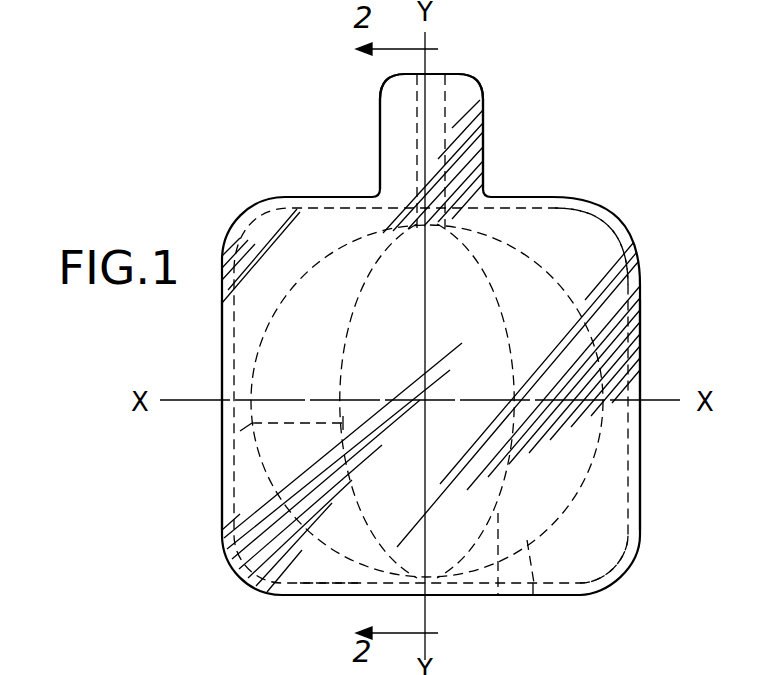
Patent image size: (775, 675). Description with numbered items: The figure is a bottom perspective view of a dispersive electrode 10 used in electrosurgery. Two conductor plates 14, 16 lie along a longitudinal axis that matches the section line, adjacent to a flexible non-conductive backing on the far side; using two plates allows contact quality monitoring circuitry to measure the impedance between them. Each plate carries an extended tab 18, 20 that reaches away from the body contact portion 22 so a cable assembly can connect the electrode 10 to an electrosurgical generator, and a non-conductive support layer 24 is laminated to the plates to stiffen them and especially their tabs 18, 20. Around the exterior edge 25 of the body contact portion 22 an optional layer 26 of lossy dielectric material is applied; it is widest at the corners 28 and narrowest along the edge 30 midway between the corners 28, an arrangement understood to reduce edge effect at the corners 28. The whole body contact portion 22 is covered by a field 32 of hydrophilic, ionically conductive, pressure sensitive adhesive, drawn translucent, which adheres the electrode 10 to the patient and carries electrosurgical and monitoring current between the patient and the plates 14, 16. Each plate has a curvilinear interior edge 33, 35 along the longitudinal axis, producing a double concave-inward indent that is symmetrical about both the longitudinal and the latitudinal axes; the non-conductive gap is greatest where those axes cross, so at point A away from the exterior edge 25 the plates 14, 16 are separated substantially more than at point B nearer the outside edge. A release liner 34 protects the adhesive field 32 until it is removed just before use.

The dispersive electrode 10 is at (208, 126).
The conductor plate 14 is at (330, 298).
The conductor plate 16 is at (517, 283).
The extended tab 18 is at (393, 98).
The extended tab 20 is at (470, 99).
The body contact portion 22 is at (650, 297).
The non-conductive support layer 24 is at (440, 82).
The exterior edge 25 is at (642, 450).
The layer of lossy dielectric material 26 is at (593, 243).
The corners 28 is at (240, 222).
The edge 30 is at (221, 376).
The field of hydrophilic, ionically conductive, pressure sensitive adhesive 32 is at (226, 502).
The interior edge 33 is at (337, 580).
The release liner 34 is at (601, 557).
The interior edge 35 is at (535, 598).
The point A is at (256, 422).
The point B is at (498, 598).